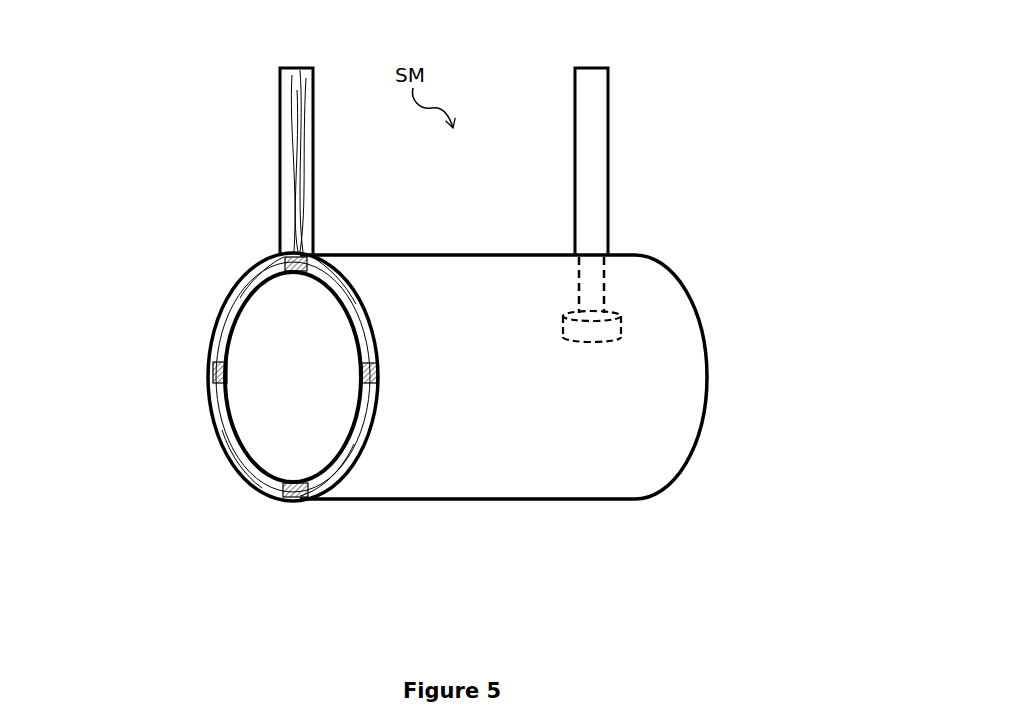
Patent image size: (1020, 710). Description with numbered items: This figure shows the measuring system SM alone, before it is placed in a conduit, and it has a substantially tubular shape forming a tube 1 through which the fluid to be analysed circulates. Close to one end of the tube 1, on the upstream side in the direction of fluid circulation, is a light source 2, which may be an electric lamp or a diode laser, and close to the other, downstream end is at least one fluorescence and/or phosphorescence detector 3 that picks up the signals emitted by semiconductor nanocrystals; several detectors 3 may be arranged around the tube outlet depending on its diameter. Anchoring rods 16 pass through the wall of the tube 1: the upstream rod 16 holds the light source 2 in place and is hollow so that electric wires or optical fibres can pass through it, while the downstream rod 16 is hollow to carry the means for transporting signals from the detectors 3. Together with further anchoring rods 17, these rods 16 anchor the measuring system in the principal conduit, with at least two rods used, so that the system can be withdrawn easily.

The tube 1 is at (487, 503).
The light source 2 is at (626, 329).
The fluorescence and/or phosphorescence detector 3 is at (276, 499).
The anchoring rod 16 is at (279, 157).
The anchoring rod 17 is at (221, 332).